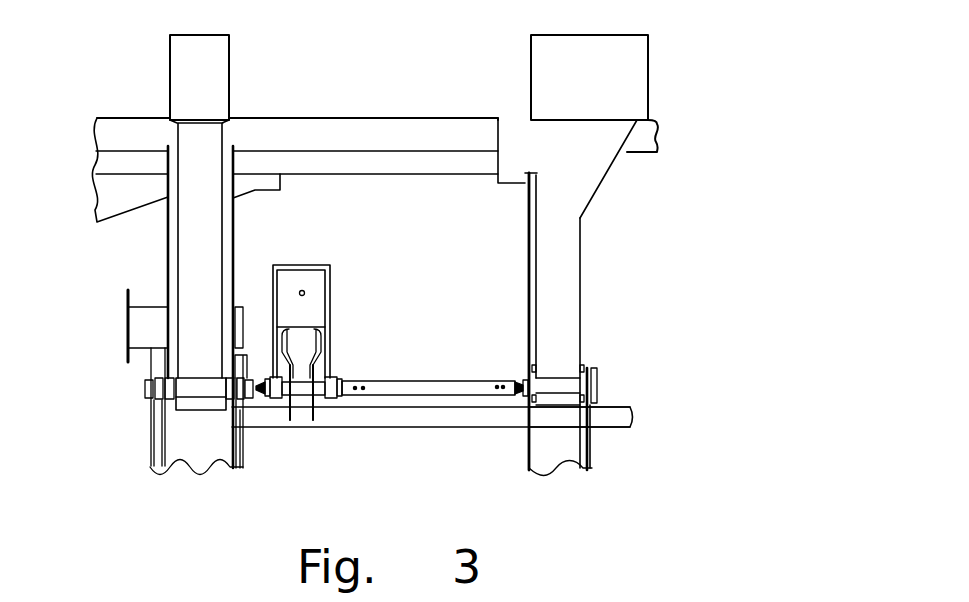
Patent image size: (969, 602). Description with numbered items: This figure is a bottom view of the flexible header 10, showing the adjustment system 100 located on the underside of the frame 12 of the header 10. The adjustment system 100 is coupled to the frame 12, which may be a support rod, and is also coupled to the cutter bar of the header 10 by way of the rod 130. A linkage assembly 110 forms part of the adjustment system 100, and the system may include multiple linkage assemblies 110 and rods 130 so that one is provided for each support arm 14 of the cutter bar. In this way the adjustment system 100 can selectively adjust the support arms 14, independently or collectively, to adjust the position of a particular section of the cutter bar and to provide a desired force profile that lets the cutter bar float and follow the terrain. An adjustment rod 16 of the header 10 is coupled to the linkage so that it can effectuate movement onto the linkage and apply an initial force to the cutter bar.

The header 10 is at (135, 82).
The frame 12 is at (615, 428).
The support arm 14 is at (572, 278).
The adjustment rod 16 is at (232, 420).
The adjustment system 100 is at (277, 432).
The linkage assembly 110 is at (300, 248).
The rod 130 is at (400, 390).